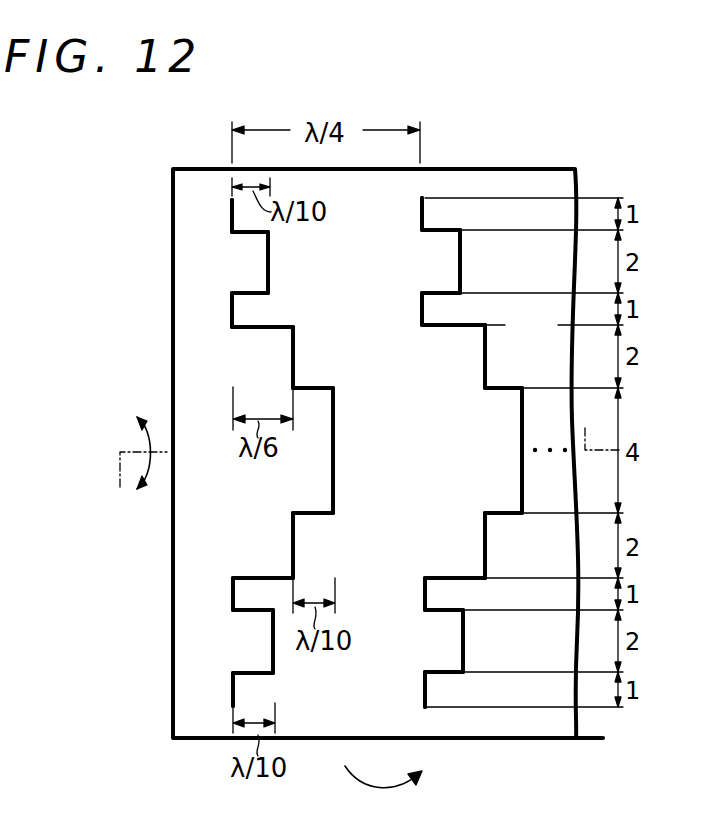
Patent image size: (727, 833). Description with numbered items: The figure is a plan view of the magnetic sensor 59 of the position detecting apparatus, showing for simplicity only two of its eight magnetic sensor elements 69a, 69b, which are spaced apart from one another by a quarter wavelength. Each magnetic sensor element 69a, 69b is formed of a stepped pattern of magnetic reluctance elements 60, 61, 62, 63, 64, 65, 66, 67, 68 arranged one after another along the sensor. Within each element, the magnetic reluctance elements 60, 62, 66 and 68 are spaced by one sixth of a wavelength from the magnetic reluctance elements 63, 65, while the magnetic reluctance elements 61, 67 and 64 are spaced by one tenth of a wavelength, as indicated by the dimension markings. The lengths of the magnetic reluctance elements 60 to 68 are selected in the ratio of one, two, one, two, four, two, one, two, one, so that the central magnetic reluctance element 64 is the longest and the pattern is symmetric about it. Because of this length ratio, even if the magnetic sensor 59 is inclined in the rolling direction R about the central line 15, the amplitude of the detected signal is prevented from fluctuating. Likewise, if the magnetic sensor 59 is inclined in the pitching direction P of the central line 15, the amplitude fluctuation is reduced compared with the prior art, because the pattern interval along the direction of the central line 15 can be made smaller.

The magnetic sensor 59 is at (515, 166).
The magnetic reluctance element 60 is at (230, 216).
The magnetic reluctance element 61 is at (270, 262).
The magnetic reluctance element 62 is at (230, 308).
The magnetic reluctance element 63 is at (295, 353).
The magnetic reluctance element 64 is at (332, 475).
The magnetic reluctance element 65 is at (292, 542).
The magnetic reluctance element 66 is at (232, 595).
The magnetic reluctance element 67 is at (272, 643).
The magnetic reluctance element 68 is at (232, 700).
The magnetic sensor element 69a is at (345, 451).
The magnetic sensor element 69b is at (508, 375).
The central line 15 is at (357, 455).
The rolling direction R is at (150, 463).
The pitching direction P is at (425, 788).